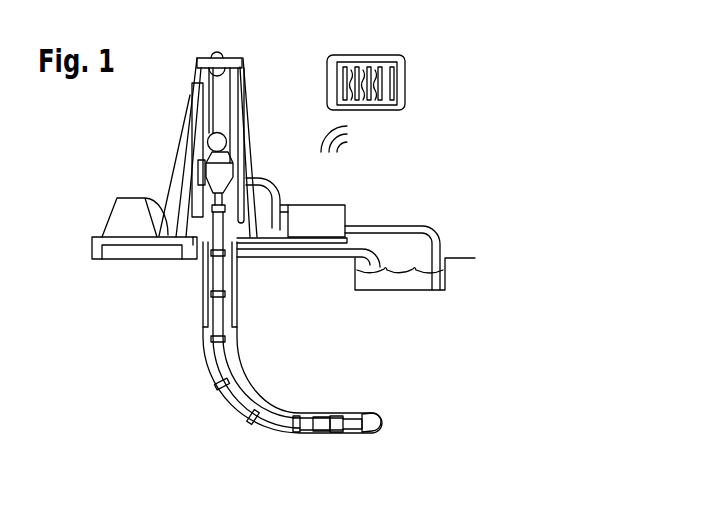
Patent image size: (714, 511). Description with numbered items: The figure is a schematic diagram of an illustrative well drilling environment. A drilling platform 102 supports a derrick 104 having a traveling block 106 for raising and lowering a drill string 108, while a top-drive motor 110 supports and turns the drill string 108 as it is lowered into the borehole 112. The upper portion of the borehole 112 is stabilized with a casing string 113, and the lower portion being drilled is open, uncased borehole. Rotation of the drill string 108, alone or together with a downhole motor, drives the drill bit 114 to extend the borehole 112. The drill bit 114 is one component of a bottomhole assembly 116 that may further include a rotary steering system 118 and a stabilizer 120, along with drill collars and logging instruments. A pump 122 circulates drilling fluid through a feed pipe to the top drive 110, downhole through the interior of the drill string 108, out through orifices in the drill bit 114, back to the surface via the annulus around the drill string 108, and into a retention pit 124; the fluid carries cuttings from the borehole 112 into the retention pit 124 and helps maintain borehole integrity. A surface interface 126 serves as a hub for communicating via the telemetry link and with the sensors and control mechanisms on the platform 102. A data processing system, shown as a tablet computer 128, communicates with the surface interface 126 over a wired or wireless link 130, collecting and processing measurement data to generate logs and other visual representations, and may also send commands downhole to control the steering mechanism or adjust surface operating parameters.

The drilling platform 102 is at (92, 240).
The derrick 104 is at (196, 79).
The traveling block 106 is at (212, 137).
The drill string 108 is at (217, 327).
The top-drive motor 110 is at (212, 167).
The borehole 112 is at (202, 307).
The casing string 113 is at (202, 272).
The drill bit 114 is at (371, 414).
The bottomhole assembly 116 is at (307, 427).
The rotary steering system 118 is at (332, 433).
The stabilizer 120 is at (295, 414).
The pump 122 is at (344, 220).
The retention pit 124 is at (355, 279).
The surface interface 126 is at (288, 205).
The tablet computer 128 is at (327, 73).
The wired or wireless link 130 is at (348, 143).